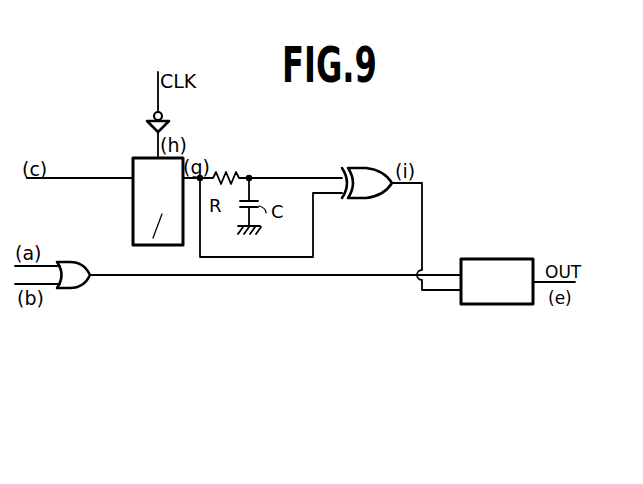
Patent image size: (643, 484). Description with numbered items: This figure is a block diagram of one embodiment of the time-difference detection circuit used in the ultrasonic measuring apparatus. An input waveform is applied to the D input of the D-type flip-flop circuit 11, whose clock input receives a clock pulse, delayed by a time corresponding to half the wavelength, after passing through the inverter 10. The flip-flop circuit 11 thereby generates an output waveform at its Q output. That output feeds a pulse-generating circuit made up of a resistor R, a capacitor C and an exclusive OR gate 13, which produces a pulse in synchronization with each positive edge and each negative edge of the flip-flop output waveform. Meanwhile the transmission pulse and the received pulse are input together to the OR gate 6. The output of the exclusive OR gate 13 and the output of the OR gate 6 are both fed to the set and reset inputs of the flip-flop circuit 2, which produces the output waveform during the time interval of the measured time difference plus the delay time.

The flip-flop circuit 2 is at (494, 259).
The OR gate 6 is at (70, 262).
The inverter 10 is at (170, 128).
The D-type flip-flop circuit 11 is at (133, 204).
The exclusive OR gate 13 is at (368, 165).